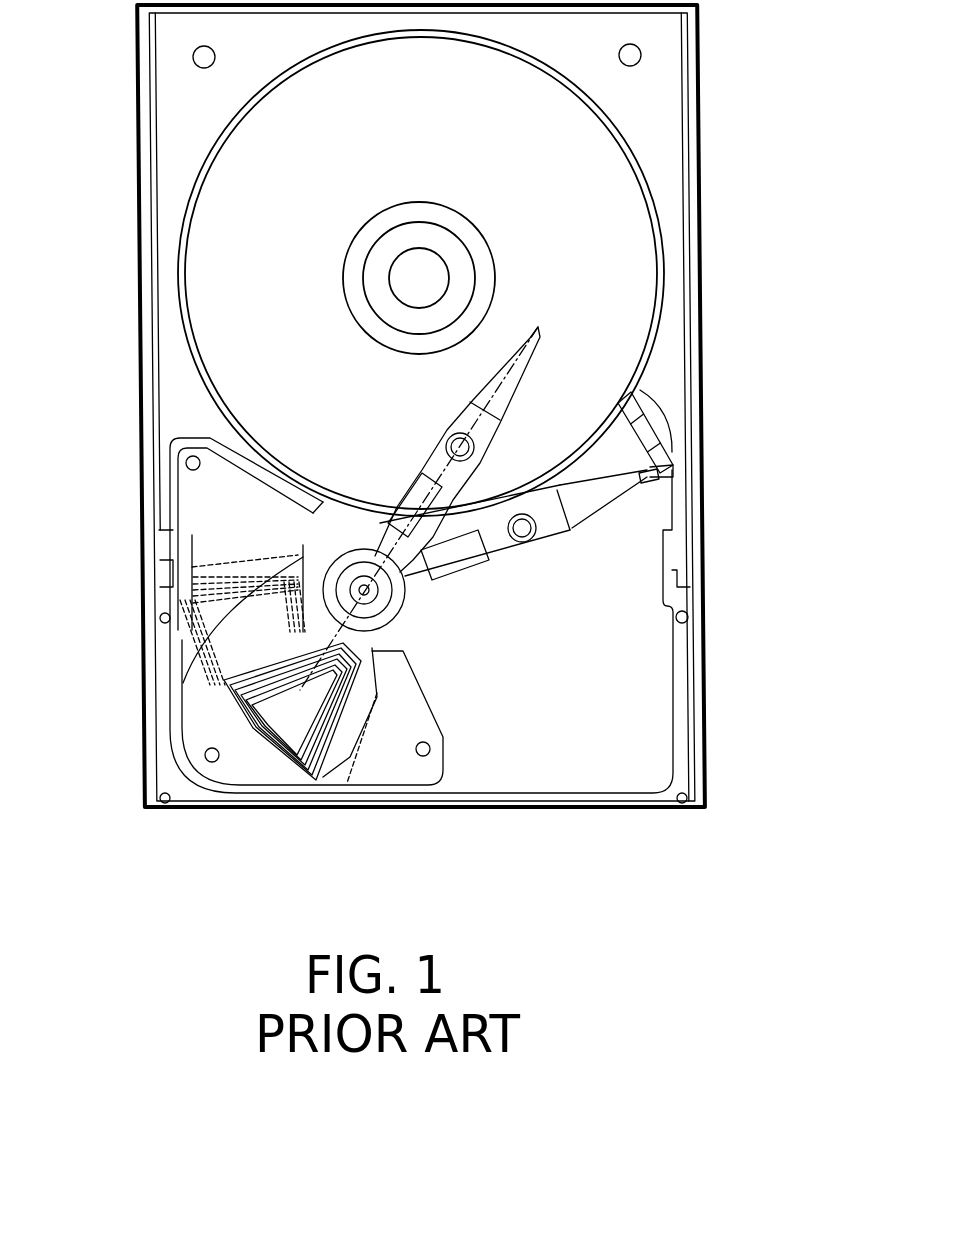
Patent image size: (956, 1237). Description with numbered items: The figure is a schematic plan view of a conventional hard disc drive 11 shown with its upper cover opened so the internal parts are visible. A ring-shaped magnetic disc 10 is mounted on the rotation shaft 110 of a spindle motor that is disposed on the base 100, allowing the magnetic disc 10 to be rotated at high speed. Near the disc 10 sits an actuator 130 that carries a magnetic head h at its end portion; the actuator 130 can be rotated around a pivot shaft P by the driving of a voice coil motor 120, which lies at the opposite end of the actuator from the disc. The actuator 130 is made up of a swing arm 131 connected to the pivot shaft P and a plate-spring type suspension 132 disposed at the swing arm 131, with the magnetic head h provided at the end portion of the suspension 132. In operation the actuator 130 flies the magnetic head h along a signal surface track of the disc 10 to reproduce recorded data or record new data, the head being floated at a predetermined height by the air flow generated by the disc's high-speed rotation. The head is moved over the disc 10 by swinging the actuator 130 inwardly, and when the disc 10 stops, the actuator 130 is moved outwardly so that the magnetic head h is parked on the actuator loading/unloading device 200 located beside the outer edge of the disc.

The magnetic disc 10 is at (622, 270).
The hard disc drive 11 is at (613, 830).
The base 100 is at (640, 700).
The rotation shaft 110 is at (413, 277).
The voice coil motor 120 is at (295, 798).
The actuator 130 is at (410, 625).
The swing arm 131 is at (467, 578).
The suspension 132 is at (592, 484).
The magnetic head h is at (667, 488).
The pivot shaft P is at (364, 590).
The actuator loading/unloading device 200 is at (667, 419).